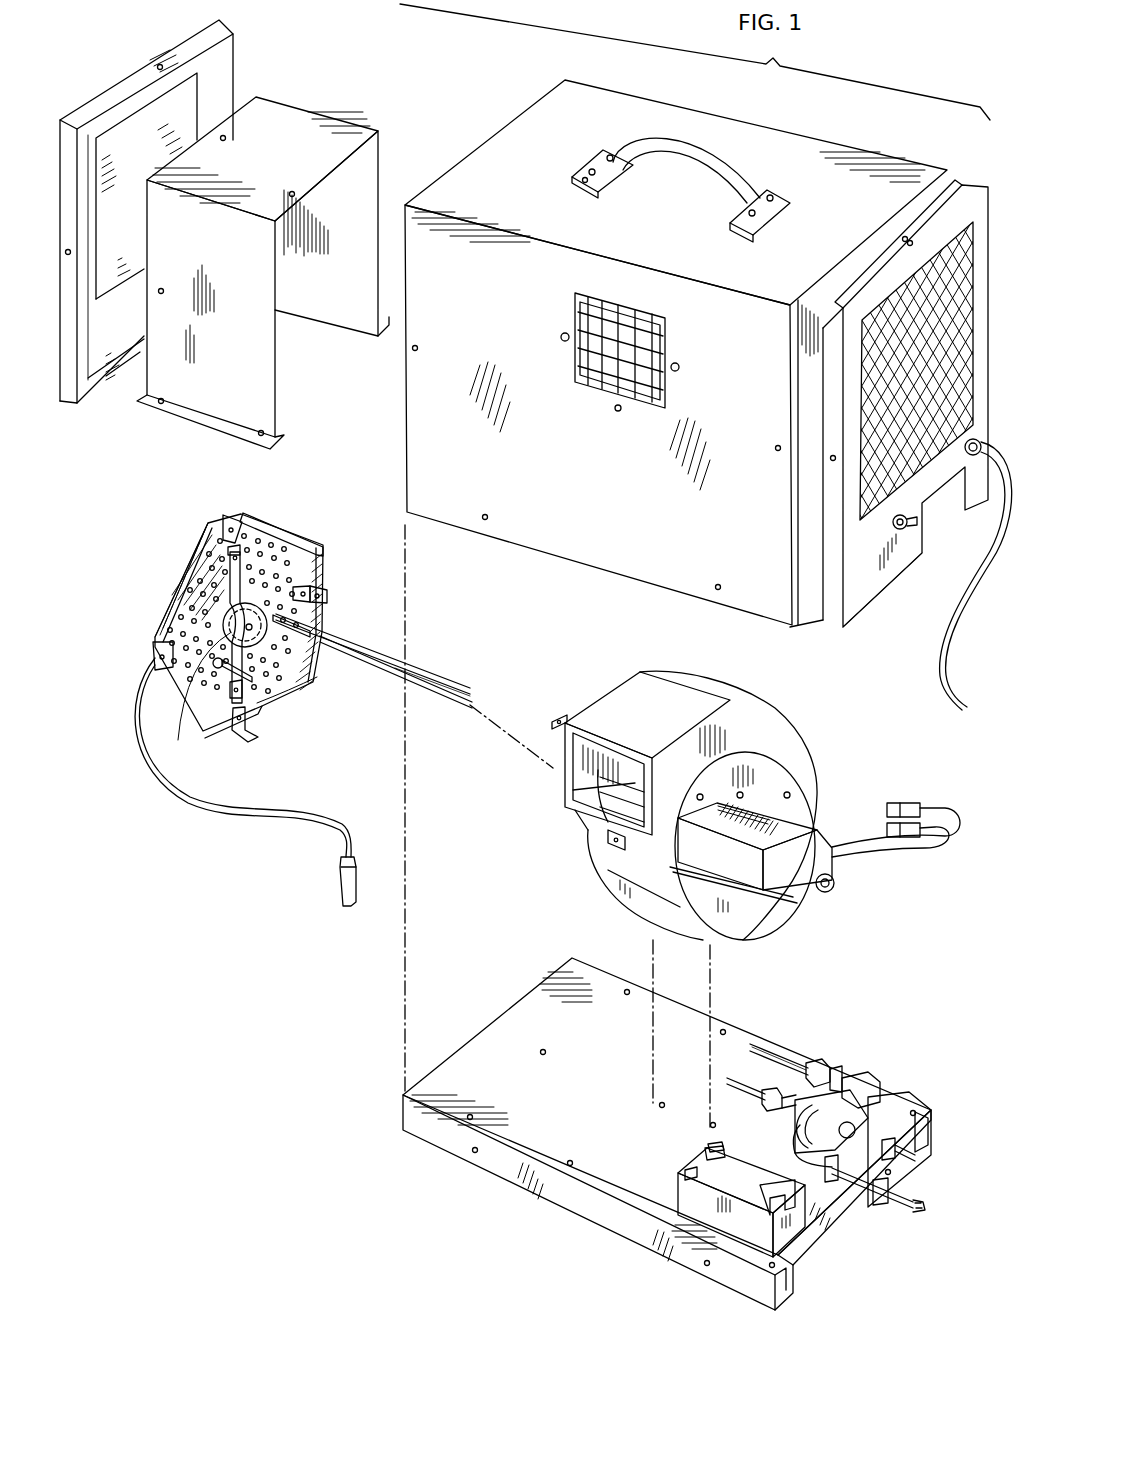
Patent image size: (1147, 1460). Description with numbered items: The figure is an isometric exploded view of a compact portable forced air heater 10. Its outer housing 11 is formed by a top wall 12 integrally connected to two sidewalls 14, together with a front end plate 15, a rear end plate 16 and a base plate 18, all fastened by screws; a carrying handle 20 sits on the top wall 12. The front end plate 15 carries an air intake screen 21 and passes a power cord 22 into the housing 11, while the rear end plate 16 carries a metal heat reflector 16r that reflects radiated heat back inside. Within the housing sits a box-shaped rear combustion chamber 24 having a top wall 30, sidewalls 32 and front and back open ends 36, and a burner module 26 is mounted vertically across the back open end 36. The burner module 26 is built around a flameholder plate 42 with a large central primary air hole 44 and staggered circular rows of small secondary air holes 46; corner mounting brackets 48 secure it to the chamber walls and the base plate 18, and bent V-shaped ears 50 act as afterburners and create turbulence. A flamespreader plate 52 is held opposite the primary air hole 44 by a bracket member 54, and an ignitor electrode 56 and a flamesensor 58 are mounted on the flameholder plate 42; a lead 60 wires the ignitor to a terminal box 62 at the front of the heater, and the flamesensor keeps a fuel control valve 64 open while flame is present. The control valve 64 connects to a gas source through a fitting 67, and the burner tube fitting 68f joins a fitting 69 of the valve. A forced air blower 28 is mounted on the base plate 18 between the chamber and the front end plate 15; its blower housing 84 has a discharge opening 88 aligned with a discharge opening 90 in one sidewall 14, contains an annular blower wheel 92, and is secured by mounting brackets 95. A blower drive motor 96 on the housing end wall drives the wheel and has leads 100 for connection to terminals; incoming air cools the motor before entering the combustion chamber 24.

The forced air heater 10 is at (278, 1030).
The outer housing 11 is at (708, 375).
The top wall 12 is at (820, 145).
The sidewalls 14 is at (950, 178).
The front end plate 15 is at (867, 593).
The rear end plate 16 is at (210, 80).
The metal heat reflector 16r is at (133, 123).
The base plate 18 is at (500, 1170).
The carrying handle 20 is at (720, 145).
The air intake screen 21 is at (880, 392).
The power cord 22 is at (950, 646).
The rear combustion chamber 24 is at (280, 260).
The burner module 26 is at (268, 690).
The forced air blower 28 is at (729, 810).
The top wall 30 is at (300, 100).
The sidewalls 32 is at (365, 172).
The front and back open ends 36 is at (138, 372).
The flameholder plate 42 is at (252, 695).
The primary air hole 44 is at (178, 598).
The secondary air holes 46 is at (268, 583).
The mounting brackets 48 is at (327, 597).
The ears 50 is at (296, 537).
The flamespreader plate 52 is at (268, 588).
The bracket member 54 is at (262, 675).
The ignitor electrode 56 is at (215, 700).
The flamesensor 58 is at (320, 628).
The lead 60 is at (217, 806).
The terminal box 62 is at (745, 1233).
The fuel control valve 64 is at (795, 1113).
The fitting 67 is at (882, 1200).
The fitting 68f is at (812, 1067).
The fitting 69 is at (880, 1072).
The blower housing 84 is at (807, 783).
The discharge opening 88 is at (573, 773).
The discharge opening 90 is at (598, 355).
The blower wheel 92 is at (635, 783).
The mounting brackets 95 is at (565, 720).
The blower drive motor 96 is at (737, 877).
The leads 100 is at (893, 848).